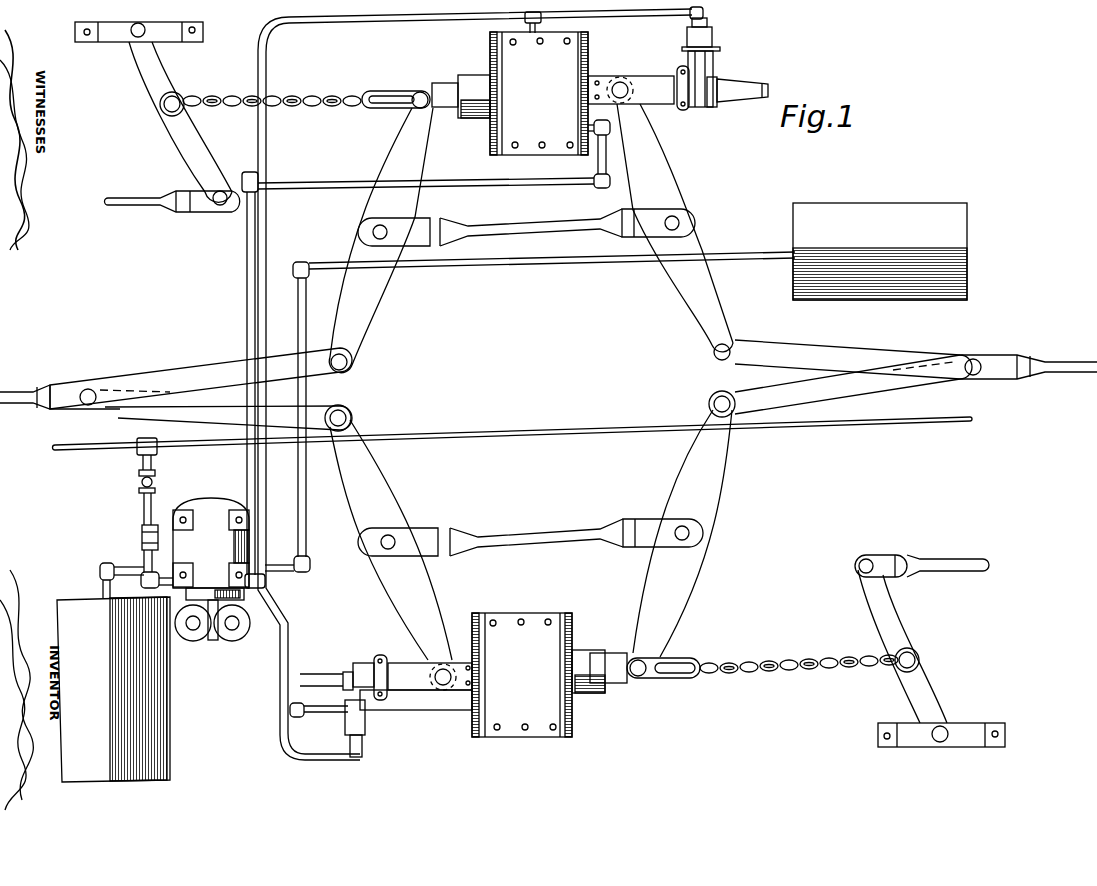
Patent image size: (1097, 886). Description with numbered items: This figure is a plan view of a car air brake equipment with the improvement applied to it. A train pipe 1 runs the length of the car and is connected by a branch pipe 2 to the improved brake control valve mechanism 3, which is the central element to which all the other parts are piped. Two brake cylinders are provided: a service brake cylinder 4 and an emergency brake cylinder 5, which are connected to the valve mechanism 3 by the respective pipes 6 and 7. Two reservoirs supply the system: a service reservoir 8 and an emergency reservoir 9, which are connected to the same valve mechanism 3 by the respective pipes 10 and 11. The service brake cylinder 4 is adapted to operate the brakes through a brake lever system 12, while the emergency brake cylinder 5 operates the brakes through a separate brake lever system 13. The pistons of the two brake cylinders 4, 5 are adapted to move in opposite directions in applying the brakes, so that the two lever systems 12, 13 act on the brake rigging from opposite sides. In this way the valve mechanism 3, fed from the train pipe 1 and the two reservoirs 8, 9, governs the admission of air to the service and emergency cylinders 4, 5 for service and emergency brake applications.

The train pipe 1 is at (503, 430).
The branch pipe 2 is at (152, 506).
The brake control valve mechanism 3 is at (218, 502).
The service brake cylinder 4 is at (570, 64).
The emergency brake cylinder 5 is at (534, 628).
The pipe 6 is at (538, 182).
The pipe 7 is at (290, 596).
The service reservoir 8 is at (86, 598).
The emergency reservoir 9 is at (865, 210).
The pipe 10 is at (132, 567).
The pipe 11 is at (745, 260).
The brake lever system 12 is at (410, 198).
The brake lever system 13 is at (528, 537).